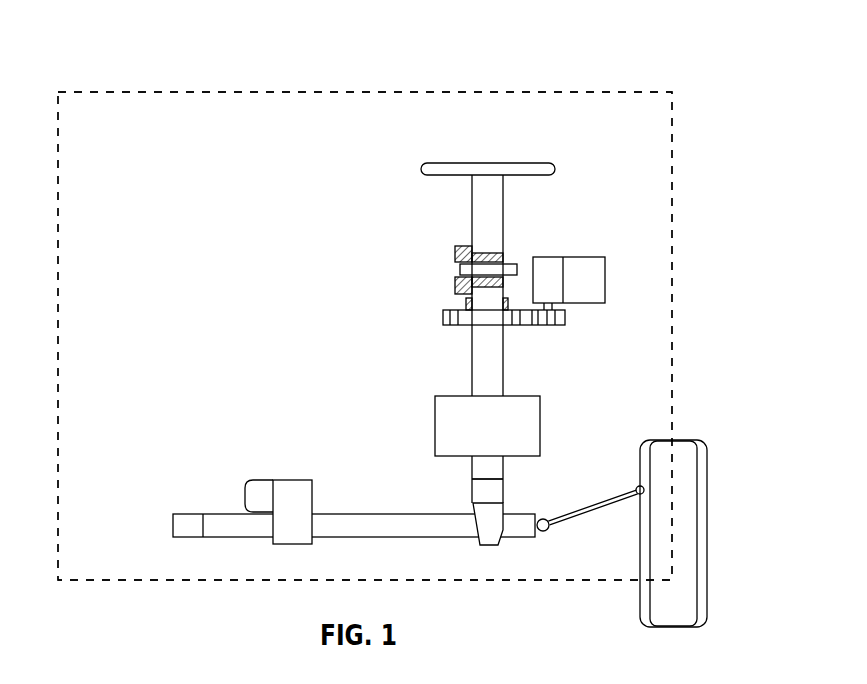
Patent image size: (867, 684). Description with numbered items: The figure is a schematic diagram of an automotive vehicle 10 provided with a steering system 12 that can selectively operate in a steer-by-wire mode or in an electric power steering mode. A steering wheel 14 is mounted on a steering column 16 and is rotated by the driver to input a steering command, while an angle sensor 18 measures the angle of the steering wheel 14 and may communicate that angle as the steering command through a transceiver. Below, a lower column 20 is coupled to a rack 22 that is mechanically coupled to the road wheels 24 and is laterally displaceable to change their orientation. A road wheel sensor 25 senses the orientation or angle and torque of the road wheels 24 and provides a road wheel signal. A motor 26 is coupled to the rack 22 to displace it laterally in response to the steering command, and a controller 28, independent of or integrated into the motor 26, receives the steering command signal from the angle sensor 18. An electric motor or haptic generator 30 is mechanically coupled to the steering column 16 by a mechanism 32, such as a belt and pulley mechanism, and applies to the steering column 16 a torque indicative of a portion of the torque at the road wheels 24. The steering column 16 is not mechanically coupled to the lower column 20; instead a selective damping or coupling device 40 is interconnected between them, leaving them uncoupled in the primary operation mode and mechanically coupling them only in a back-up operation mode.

The automotive vehicle 10 is at (137, 582).
The steering system 12 is at (619, 43).
The steering wheel 14 is at (421, 169).
The steering column 16 is at (472, 210).
The angle sensor 18 is at (598, 270).
The lower column 20 is at (485, 463).
The rack 22 is at (220, 525).
The road wheels 24 is at (697, 482).
The road wheel sensor 25 is at (505, 490).
The motor 26 is at (293, 480).
The controller 28 is at (257, 480).
The electric motor or haptic generator 30 is at (547, 257).
The mechanism 32 is at (545, 326).
The selective damping or coupling device 40 is at (457, 396).